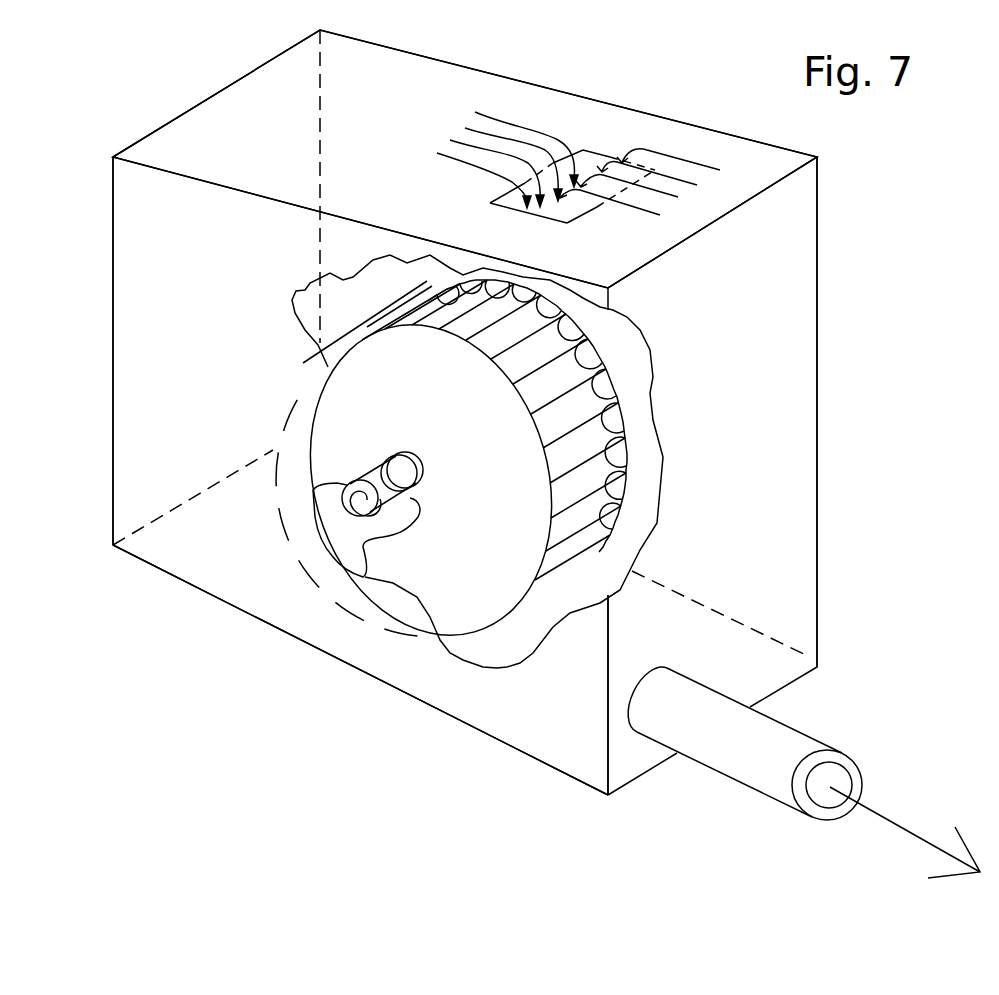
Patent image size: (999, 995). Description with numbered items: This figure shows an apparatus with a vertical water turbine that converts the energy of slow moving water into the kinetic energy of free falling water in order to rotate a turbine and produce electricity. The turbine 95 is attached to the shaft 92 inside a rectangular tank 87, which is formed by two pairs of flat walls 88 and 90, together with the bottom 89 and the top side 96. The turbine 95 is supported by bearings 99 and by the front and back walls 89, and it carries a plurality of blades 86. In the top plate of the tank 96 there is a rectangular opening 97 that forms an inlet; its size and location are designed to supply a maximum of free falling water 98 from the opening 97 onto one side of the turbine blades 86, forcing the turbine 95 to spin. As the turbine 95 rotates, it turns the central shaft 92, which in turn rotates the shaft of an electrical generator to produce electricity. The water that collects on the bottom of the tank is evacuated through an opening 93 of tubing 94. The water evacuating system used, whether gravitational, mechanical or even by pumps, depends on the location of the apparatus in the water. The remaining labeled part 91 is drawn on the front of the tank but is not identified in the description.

The fan 86 is at (650, 413).
The housing 87 is at (815, 275).
The side wall 88 is at (816, 454).
The bottom wall 89 is at (220, 575).
The end wall 90 is at (137, 312).
The front wall 91 is at (457, 670).
The motor shaft 92 is at (314, 491).
The outlet 93 is at (840, 777).
The outlet conduit 94 is at (727, 770).
The fan shroud 95 is at (507, 665).
The top wall 96 is at (197, 126).
The exhaust flow 97 is at (593, 153).
The air inlet flow 98 is at (498, 121).
The inlet opening 99 is at (352, 593).